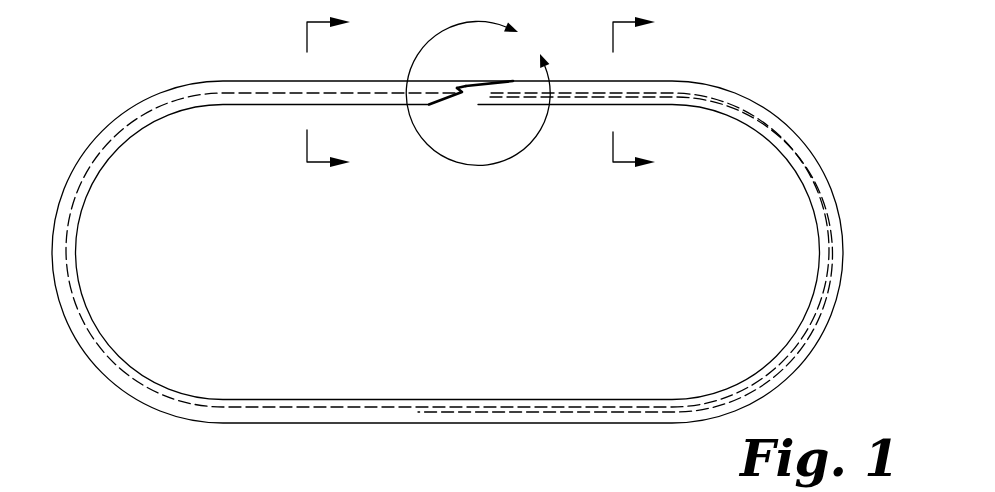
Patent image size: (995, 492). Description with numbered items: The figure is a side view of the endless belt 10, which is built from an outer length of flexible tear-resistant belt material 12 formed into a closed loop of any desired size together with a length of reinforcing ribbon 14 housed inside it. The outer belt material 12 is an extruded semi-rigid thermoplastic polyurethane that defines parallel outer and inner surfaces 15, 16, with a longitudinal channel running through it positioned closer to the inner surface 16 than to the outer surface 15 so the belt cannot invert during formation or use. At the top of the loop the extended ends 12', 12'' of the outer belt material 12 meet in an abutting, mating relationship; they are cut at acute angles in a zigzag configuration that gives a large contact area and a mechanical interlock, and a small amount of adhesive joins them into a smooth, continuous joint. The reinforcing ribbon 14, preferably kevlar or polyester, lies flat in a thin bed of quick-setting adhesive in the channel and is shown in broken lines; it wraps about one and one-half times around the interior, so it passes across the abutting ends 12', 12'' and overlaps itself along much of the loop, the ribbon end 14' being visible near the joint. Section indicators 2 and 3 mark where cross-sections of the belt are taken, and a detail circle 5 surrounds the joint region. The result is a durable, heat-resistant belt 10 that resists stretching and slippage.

The endless belt 10 is at (455, 224).
The outer length of flexible tear-resistant belt material 12 is at (447, 229).
The extended end of outer belt length 12' is at (473, 122).
The extended end of outer belt length 12'' is at (485, 62).
The reinforcing ribbon 14 is at (462, 252).
The end of core member 14' is at (625, 254).
The outer surface 15 is at (257, 80).
The inner surface 16 is at (268, 105).
The section line 2- 2 is at (344, 93).
The section line 3- 3 is at (650, 93).
The detail circle 5 is at (478, 93).